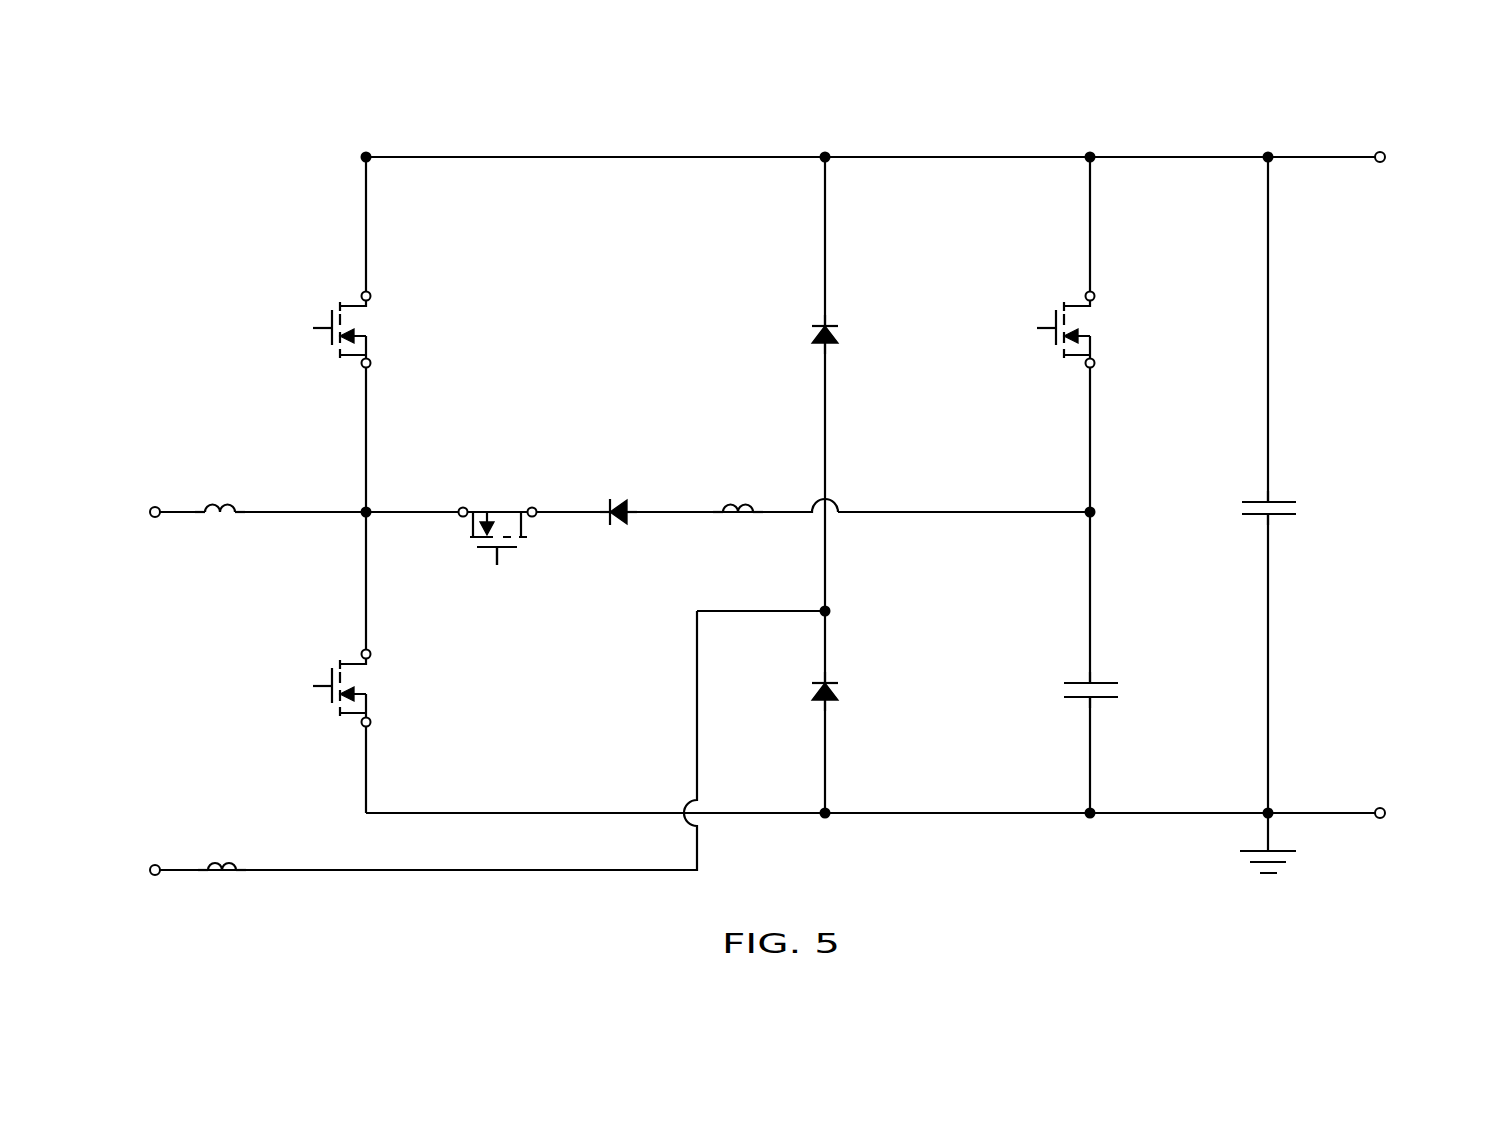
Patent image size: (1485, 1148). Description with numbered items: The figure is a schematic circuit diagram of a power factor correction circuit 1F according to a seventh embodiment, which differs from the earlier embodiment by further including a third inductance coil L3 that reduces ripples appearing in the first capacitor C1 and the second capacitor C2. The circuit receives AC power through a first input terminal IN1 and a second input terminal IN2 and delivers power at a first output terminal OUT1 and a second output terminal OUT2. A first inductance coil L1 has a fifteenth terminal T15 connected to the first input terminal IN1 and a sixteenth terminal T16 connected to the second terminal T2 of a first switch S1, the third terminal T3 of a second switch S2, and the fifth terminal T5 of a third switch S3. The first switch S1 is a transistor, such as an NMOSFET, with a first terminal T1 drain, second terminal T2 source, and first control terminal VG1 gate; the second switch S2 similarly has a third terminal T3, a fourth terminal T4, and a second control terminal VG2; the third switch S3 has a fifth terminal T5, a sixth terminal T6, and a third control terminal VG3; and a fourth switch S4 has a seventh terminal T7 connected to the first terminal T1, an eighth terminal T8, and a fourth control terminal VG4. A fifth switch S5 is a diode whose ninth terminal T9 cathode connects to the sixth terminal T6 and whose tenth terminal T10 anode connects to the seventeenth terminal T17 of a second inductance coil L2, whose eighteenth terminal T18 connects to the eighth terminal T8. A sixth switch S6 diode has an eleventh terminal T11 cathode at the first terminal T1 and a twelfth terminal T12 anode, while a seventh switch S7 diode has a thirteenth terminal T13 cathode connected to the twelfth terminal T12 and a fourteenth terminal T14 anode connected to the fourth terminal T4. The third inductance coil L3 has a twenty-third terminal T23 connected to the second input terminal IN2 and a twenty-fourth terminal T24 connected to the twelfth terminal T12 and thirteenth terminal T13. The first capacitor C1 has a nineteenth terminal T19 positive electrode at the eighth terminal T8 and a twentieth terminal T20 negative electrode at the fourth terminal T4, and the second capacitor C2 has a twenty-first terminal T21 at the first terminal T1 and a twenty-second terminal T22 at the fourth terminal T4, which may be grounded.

The power factor correction circuit 1F is at (185, 131).
The first input terminal IN1 is at (129, 512).
The second input terminal IN2 is at (129, 870).
The first output terminal OUT1 is at (1423, 157).
The second output terminal OUT2 is at (1423, 813).
The first switch S1 is at (359, 329).
The second switch S2 is at (359, 688).
The third switch S3 is at (498, 520).
The fourth switch S4 is at (1083, 329).
The fifth switch S5 is at (617, 529).
The sixth switch S6 is at (807, 330).
The seventh switch S7 is at (807, 687).
The first control terminal VG1 is at (322, 328).
The second control terminal VG2 is at (322, 686).
The third control terminal VG3 is at (497, 562).
The fourth control terminal VG4 is at (1046, 328).
The first inductance coil L1 is at (221, 492).
The second inductance coil L2 is at (738, 528).
The third inductance coil L3 is at (219, 884).
The first capacitor C1 is at (1073, 690).
The second capacitor C2 is at (1248, 510).
The first terminal T1 is at (371, 296).
The second terminal T2 is at (371, 363).
The third terminal T3 is at (371, 654).
The fourth terminal T4 is at (371, 722).
The fifth terminal T5 is at (463, 507).
The sixth terminal T6 is at (532, 507).
The seventh terminal T7 is at (1095, 296).
The eighth terminal T8 is at (1095, 363).
The ninth terminal T9 is at (607, 504).
The tenth terminal T10 is at (630, 504).
The eleventh terminal T11 is at (830, 322).
The twelfth terminal T12 is at (830, 347).
The thirteenth terminal T13 is at (830, 679).
The fourteenth terminal T14 is at (830, 704).
The fifteenth terminal T15 is at (205, 508).
The sixteenth terminal T16 is at (237, 508).
The seventeenth terminal T17 is at (722, 508).
The eighteenth terminal T18 is at (755, 508).
The nineteenth terminal T19 is at (1094, 680).
The twentieth terminal T20 is at (1094, 700).
The twenty-first terminal T21 is at (1272, 498).
The twenty-second terminal T22 is at (1272, 518).
The twenty-third terminal T23 is at (208, 866).
The twenty-fourth terminal T24 is at (238, 866).